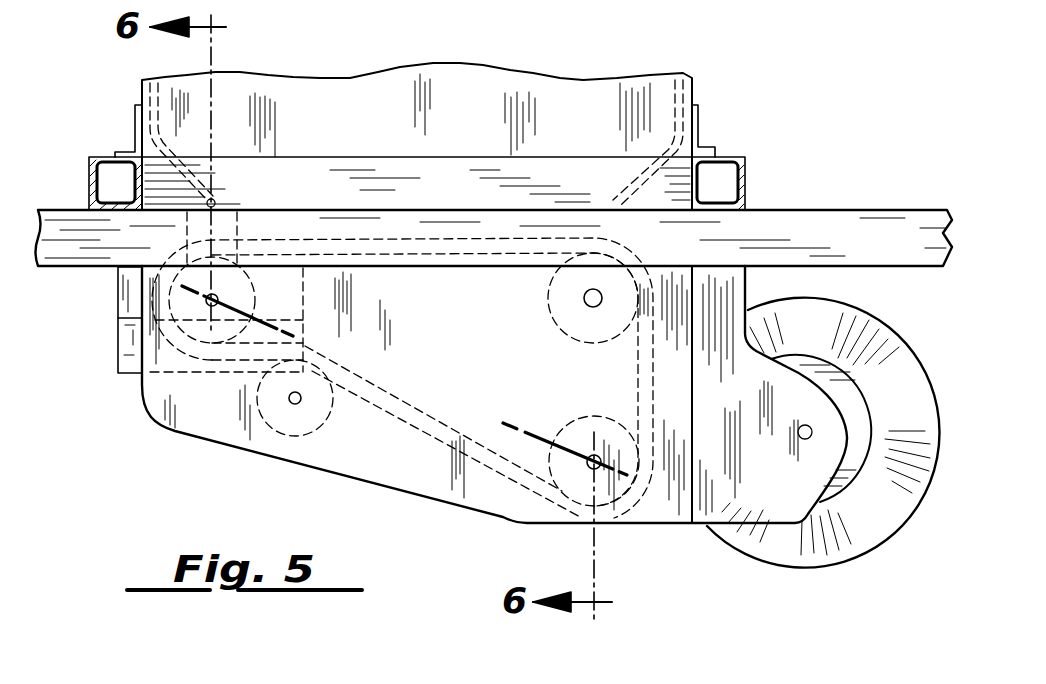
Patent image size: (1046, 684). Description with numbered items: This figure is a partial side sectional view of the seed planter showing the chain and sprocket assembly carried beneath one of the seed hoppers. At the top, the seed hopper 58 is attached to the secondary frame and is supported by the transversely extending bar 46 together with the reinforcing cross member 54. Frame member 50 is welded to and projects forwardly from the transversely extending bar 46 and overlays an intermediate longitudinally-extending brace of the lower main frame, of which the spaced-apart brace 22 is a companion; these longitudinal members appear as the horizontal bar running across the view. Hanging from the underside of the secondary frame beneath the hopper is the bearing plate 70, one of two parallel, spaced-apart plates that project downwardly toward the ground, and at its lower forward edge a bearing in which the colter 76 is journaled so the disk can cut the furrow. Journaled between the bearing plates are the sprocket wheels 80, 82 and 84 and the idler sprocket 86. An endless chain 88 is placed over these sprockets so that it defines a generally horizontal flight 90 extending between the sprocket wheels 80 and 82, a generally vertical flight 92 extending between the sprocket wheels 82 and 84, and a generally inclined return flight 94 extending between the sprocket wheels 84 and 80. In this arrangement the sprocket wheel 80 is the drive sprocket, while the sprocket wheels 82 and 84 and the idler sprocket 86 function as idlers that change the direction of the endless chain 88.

The longitudinally-extending brace 22 is at (822, 223).
The transversely extending bar 46 is at (110, 158).
The frame member 50 is at (453, 194).
The cross member 54 is at (727, 157).
The seed hopper 58 is at (702, 78).
The bearing plate 70 is at (440, 472).
The colter 76 is at (850, 537).
The sprocket wheel 80 is at (258, 290).
The sprocket wheel 82 is at (552, 317).
The sprocket wheel 84 is at (573, 418).
The idler sprocket 86 is at (322, 420).
The endless chain 88 is at (374, 380).
The horizontal flight 90 is at (382, 252).
The vertical flight 92 is at (640, 378).
The inclined return flight 94 is at (440, 420).